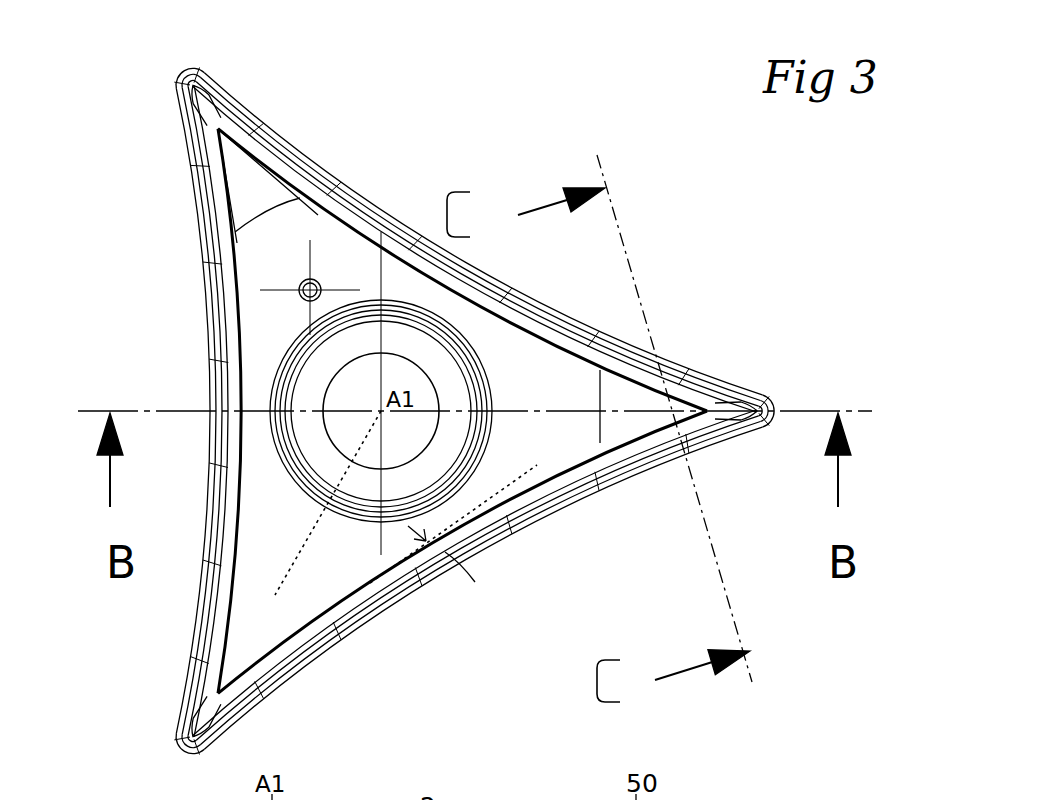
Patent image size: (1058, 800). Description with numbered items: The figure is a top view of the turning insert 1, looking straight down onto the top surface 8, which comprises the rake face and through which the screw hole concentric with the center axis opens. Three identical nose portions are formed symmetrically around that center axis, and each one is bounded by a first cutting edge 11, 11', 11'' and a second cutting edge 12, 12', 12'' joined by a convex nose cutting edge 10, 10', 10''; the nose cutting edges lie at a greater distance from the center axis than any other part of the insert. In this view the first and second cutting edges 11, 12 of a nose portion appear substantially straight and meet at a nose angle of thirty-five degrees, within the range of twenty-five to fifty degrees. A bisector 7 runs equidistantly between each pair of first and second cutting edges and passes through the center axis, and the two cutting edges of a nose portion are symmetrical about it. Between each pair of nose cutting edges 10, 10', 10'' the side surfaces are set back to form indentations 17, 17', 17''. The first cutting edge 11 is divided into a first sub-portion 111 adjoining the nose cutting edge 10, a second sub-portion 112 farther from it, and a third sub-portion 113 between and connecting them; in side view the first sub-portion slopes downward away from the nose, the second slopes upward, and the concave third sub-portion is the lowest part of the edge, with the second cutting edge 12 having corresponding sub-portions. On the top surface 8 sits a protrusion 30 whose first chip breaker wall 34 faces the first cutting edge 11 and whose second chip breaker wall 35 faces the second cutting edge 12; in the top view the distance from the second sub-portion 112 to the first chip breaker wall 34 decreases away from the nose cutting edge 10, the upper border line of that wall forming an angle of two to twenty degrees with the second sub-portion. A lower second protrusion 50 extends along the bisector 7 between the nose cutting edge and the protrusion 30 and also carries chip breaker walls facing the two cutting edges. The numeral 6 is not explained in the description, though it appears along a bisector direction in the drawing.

The turning insert 1 is at (430, 111).
The corner bisector 6 is at (328, 503).
The bisector 7 is at (282, 580).
The top surface 8 is at (393, 411).
The nose cutting edge 10 is at (108, 766).
The nose cutting edge 10' is at (135, 61).
The nose cutting edge 10'' is at (825, 388).
The first cutting edge 11 is at (479, 594).
The first cutting edge 11' is at (123, 122).
The first cutting edge 11'' is at (751, 343).
The second cutting edge 12 is at (116, 687).
The second cutting edge 12' is at (273, 86).
The second cutting edge 12'' is at (754, 491).
The indentation 17 is at (474, 573).
The indentation 17' is at (160, 411).
The indentation 17'' is at (477, 242).
The protrusion 30 is at (240, 618).
The first chip breaker wall 34 is at (285, 647).
The second chip breaker wall 35 is at (223, 638).
The second protrusion 50 is at (203, 719).
The first sub-portion 111 is at (230, 727).
The second sub-portion 112 is at (297, 678).
The third sub-portion 113 is at (263, 700).